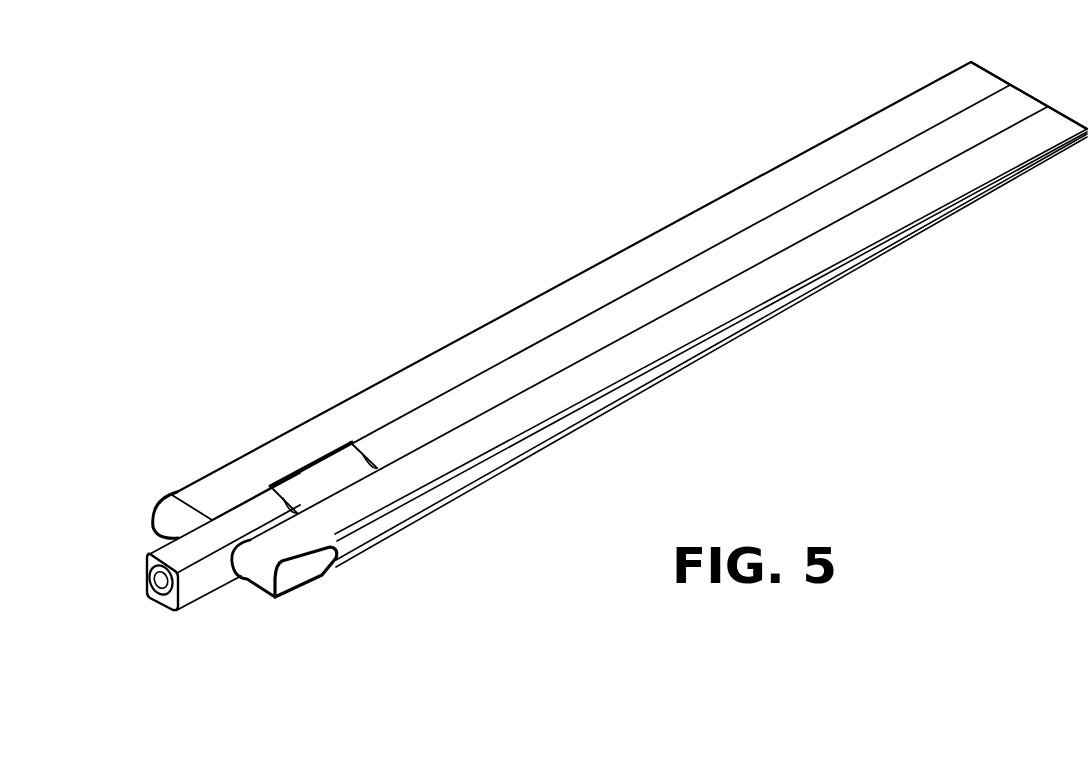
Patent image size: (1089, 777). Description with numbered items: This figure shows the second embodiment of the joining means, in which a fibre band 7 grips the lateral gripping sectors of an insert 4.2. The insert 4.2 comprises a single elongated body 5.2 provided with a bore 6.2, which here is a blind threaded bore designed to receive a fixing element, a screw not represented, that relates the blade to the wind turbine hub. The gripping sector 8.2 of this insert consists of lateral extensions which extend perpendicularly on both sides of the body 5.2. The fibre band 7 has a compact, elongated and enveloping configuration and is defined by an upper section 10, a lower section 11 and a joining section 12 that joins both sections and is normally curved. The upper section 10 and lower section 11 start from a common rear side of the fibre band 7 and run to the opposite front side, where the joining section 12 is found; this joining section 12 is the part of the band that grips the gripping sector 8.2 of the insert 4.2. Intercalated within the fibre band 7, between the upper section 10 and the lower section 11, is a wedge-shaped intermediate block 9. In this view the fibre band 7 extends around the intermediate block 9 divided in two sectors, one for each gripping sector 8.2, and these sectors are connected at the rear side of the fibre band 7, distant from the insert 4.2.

The upper section 10 is at (743, 297).
The fibre band 7 is at (892, 255).
The intermediate block 9 is at (445, 488).
The lower section 11 is at (692, 360).
The elongated body 5.2 is at (313, 475).
The gripping sector 8.2 is at (180, 483).
The joining section 12 is at (262, 568).
The insert 4.2 is at (235, 602).
The bore 6.2 is at (158, 590).